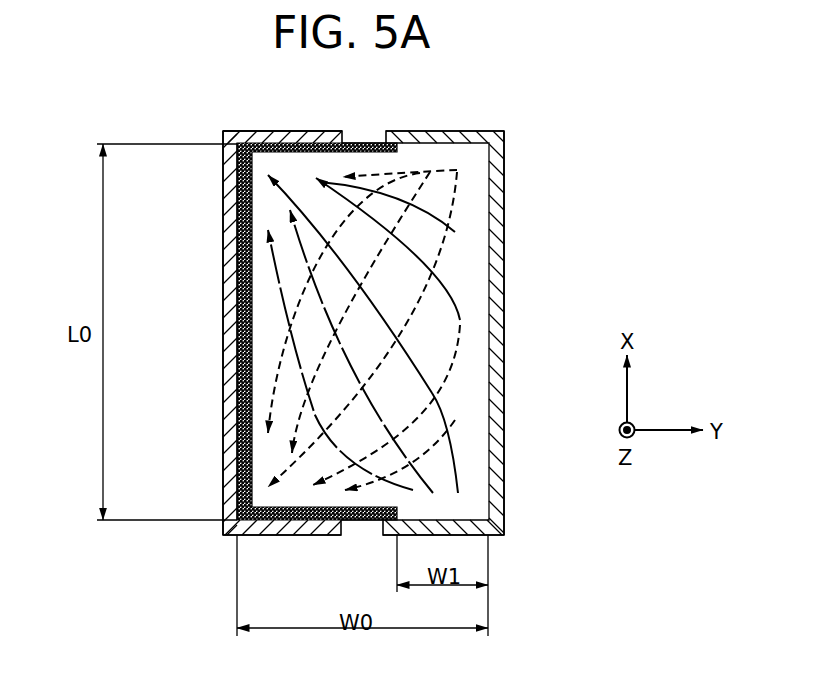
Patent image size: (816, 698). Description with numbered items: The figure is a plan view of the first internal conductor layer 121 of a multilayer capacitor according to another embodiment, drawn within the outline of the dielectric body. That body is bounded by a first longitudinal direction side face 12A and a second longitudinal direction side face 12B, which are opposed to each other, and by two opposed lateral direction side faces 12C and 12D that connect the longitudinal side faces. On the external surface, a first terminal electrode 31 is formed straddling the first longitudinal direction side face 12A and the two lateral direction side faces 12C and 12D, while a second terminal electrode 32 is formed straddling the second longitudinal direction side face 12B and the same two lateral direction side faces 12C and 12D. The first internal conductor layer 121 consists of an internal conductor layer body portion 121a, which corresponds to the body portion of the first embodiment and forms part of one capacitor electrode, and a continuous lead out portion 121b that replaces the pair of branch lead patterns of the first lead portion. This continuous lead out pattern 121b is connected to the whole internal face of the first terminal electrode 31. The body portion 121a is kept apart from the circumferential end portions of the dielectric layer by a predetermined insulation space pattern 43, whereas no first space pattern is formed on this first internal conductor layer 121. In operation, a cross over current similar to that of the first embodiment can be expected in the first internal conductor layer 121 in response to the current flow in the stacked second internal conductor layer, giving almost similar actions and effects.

The first terminal electrode 31 is at (363, 332).
The second terminal electrode 32 is at (232, 266).
The insulation space pattern 43 is at (284, 140).
The first longitudinal direction side face 12A is at (498, 283).
The second longitudinal direction side face 12B is at (233, 419).
The lateral direction side face 12C is at (357, 521).
The lateral direction side face 12D is at (367, 143).
The first internal conductor layer 121 is at (372, 304).
The internal conductor layer body portion 121a is at (270, 334).
The continuous lead out portion 121b is at (453, 160).